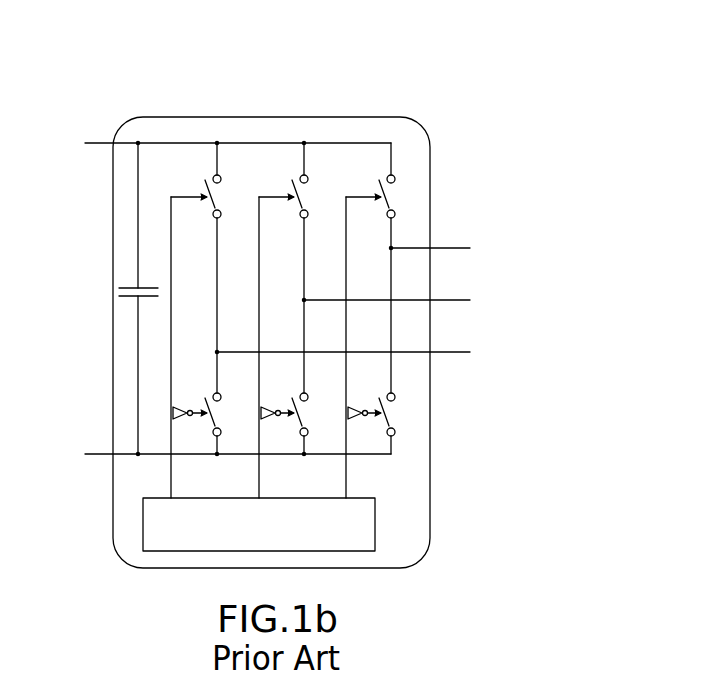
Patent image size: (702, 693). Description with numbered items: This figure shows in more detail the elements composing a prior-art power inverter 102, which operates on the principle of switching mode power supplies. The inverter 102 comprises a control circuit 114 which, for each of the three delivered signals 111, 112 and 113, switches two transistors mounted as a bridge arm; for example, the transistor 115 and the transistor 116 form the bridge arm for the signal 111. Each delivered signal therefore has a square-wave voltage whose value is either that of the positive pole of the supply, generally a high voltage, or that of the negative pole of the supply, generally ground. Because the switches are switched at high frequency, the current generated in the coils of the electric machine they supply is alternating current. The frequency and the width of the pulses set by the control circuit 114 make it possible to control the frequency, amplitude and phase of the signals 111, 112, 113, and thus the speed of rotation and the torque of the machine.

The inverter 102 is at (298, 117).
The signal 111 is at (457, 248).
The signal 112 is at (457, 300).
The signal 113 is at (457, 352).
The control circuit 114 is at (375, 519).
The transistor 115 is at (397, 192).
The transistor 116 is at (395, 412).